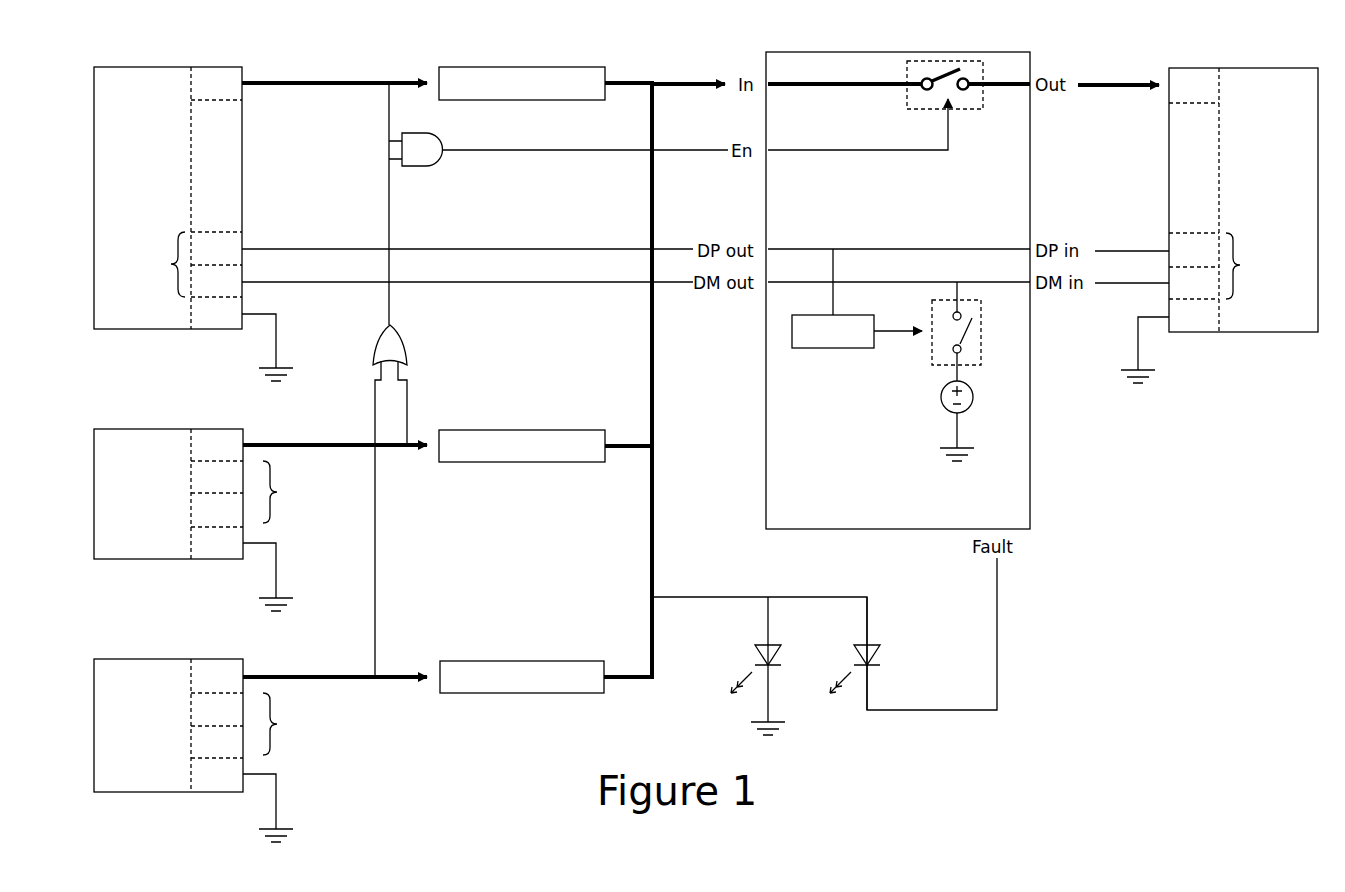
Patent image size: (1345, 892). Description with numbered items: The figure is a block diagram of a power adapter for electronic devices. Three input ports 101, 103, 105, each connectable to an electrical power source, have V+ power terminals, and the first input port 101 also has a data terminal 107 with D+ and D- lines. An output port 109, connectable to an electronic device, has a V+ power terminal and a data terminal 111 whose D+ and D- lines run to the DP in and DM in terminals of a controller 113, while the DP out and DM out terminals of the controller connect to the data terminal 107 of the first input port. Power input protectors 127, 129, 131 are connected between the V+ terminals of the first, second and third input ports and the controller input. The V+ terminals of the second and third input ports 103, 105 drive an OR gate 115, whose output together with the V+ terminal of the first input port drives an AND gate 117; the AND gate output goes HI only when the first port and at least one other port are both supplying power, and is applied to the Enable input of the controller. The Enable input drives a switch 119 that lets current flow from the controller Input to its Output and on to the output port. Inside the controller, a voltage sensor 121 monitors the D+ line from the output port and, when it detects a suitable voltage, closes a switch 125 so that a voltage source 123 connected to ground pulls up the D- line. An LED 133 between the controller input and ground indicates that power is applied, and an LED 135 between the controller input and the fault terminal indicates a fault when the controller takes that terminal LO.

The first input port 101 is at (143, 67).
The second input port 103 is at (143, 429).
The third input port 105 is at (143, 659).
The data terminal 107 is at (160, 264).
The output port 109 is at (1228, 68).
The data terminal 111 is at (1250, 266).
The controller 113 is at (855, 52).
The OR gate 115 is at (404, 346).
The AND gate 117 is at (428, 166).
The switch 119 is at (970, 112).
The voltage sensor 121 is at (800, 348).
The voltage source 123 is at (941, 405).
The switch 125 is at (932, 356).
The power input protector 127 is at (477, 67).
The power input protector 129 is at (485, 430).
The power input protector 131 is at (485, 661).
The light-emitting diode 133 is at (763, 640).
The LED 135 is at (861, 640).